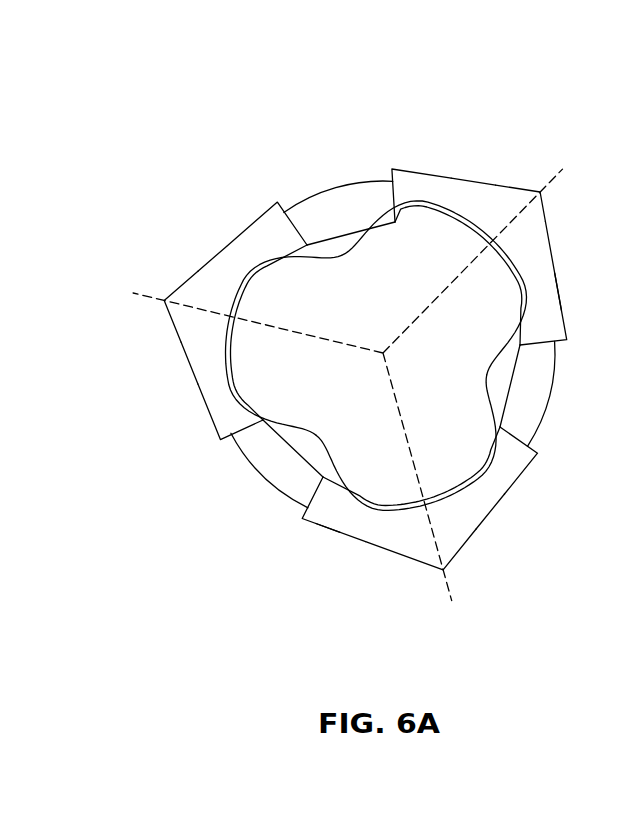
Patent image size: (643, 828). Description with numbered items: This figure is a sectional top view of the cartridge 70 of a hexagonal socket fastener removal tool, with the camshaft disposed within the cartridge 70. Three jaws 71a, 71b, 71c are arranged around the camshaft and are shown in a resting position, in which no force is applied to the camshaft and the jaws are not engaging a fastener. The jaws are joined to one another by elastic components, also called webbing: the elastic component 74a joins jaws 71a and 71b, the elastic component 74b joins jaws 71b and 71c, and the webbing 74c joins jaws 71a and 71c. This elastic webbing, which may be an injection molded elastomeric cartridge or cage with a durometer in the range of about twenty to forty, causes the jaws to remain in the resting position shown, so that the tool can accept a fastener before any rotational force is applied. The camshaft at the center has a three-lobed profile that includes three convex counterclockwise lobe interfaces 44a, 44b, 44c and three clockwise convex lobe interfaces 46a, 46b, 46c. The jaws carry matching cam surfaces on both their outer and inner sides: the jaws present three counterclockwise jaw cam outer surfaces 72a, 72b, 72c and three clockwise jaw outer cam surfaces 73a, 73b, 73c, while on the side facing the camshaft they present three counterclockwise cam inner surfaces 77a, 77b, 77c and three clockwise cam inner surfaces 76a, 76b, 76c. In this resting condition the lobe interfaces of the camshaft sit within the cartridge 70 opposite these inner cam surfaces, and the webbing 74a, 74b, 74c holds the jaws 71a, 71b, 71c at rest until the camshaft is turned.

The cartridge 70 is at (164, 163).
The jaw 71a is at (545, 191).
The jaw 71b is at (412, 548).
The jaw 71c is at (183, 278).
The counterclockwise jaw cam outer surface 72a is at (433, 175).
The counterclockwise jaw cam outer surface 72b is at (497, 510).
The counterclockwise jaw cam outer surface 72c is at (215, 428).
The clockwise jaw outer cam surface 73a is at (550, 235).
The clockwise jaw outer cam surface 73b is at (348, 495).
The clockwise jaw outer cam surface 73c is at (270, 212).
The elastic component 74a is at (537, 388).
The elastic component 74b is at (243, 468).
The webbing 74c is at (342, 186).
The clockwise cam inner surface 76a is at (525, 320).
The clockwise cam inner surface 76b is at (318, 526).
The clockwise cam inner surface 76c is at (227, 245).
The counterclockwise cam inner surface 77a is at (470, 183).
The counterclockwise cam inner surface 77b is at (523, 473).
The counterclockwise cam inner surface 77c is at (232, 370).
The convex counterclockwise lobe interface 44a is at (390, 220).
The convex counterclockwise lobe interface 44b is at (437, 517).
The convex counterclockwise lobe interface 44c is at (232, 323).
The clockwise convex lobe interface 46a is at (523, 300).
The clockwise convex lobe interface 46b is at (370, 541).
The clockwise convex lobe interface 46c is at (292, 252).